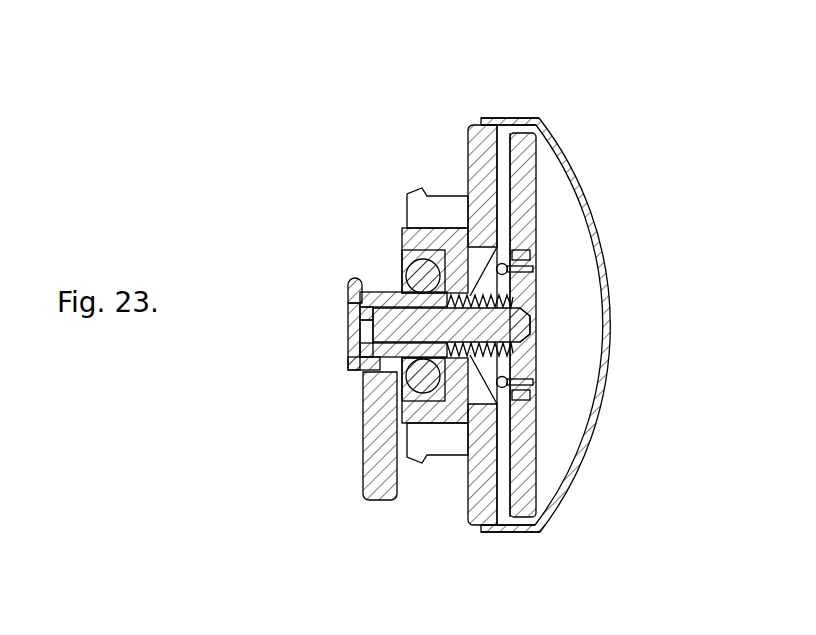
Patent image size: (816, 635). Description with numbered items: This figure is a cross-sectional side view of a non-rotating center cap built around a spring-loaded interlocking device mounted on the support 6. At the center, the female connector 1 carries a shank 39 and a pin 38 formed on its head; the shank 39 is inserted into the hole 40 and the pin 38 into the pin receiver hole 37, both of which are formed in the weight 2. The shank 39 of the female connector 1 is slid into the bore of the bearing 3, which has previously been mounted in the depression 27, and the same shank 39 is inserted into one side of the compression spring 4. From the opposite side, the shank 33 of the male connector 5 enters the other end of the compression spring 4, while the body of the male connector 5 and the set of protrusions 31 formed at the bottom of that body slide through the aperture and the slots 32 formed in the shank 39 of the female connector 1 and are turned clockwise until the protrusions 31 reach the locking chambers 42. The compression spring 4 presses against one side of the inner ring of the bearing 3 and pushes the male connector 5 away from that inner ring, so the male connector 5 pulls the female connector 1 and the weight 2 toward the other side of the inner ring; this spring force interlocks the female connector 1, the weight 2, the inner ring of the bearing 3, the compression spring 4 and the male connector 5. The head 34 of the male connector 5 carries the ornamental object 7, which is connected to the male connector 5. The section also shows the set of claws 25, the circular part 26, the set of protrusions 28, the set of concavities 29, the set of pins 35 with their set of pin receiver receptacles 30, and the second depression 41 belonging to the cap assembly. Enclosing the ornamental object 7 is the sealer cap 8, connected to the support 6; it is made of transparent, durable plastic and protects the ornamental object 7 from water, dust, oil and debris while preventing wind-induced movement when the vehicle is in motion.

The female connector 1 is at (345, 347).
The weight 2 is at (358, 498).
The bearing 3 is at (438, 425).
The compression spring 4 is at (528, 297).
The male connector 5 is at (347, 325).
The support 6 is at (491, 127).
The ornamental object 7 is at (530, 480).
The sealer cap 8 is at (592, 176).
The set of claws 25 is at (415, 182).
The circular part 26 is at (461, 127).
The depression 27 is at (422, 232).
The set of protrusions 28 is at (483, 117).
The set of concavities 29 is at (497, 528).
The set of pin receiver receptacles 30 is at (530, 257).
The set of protrusions 31 is at (352, 313).
The slots 32 is at (362, 348).
The shank 33 is at (504, 323).
The head 34 is at (537, 320).
The set of pins 35 is at (530, 266).
The pin receiver hole 37 is at (358, 384).
The pin 38 is at (366, 376).
The shank 39 is at (375, 285).
The hole 40 is at (392, 277).
The second depression 41 is at (522, 386).
The locking chambers 42 is at (350, 293).